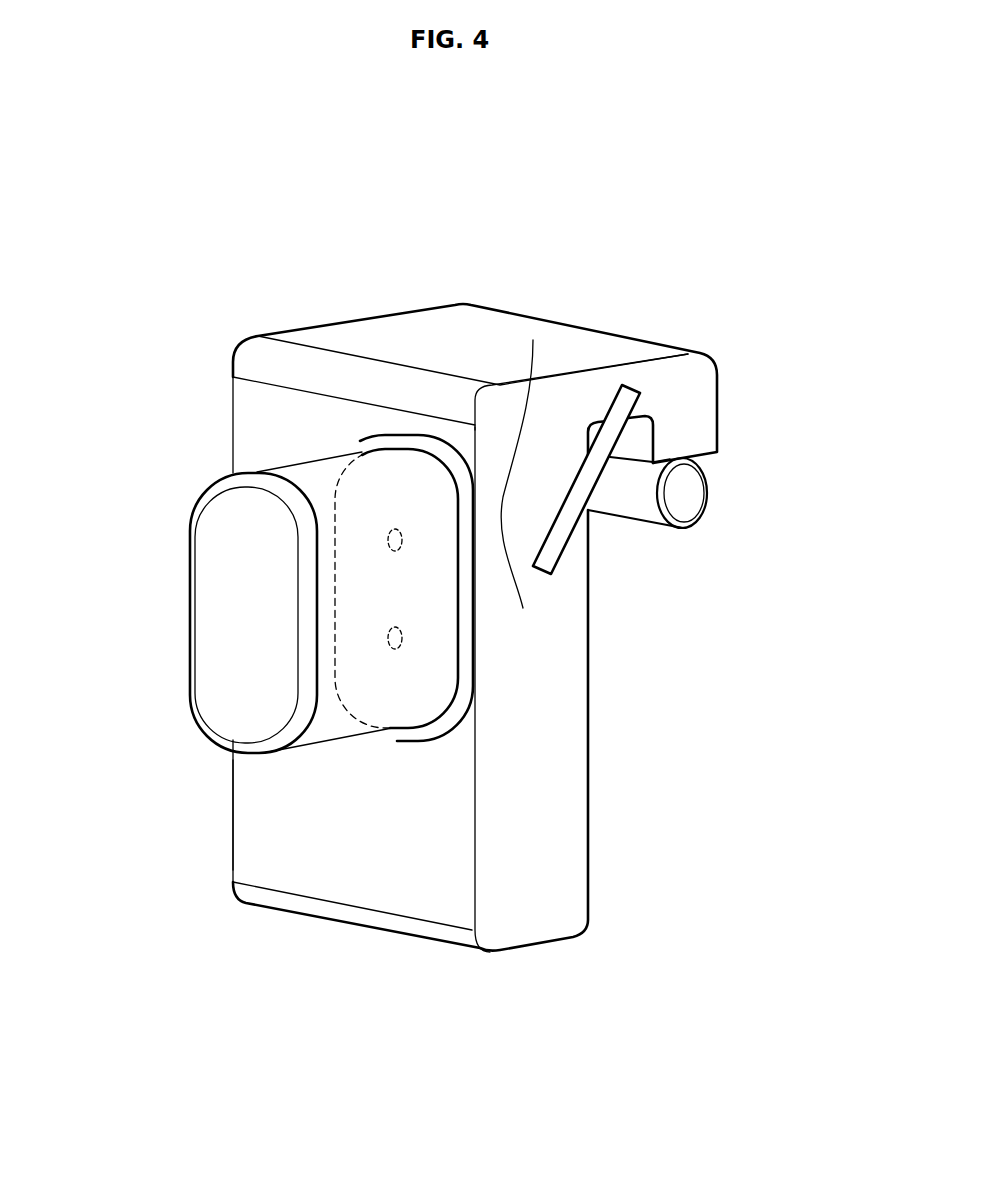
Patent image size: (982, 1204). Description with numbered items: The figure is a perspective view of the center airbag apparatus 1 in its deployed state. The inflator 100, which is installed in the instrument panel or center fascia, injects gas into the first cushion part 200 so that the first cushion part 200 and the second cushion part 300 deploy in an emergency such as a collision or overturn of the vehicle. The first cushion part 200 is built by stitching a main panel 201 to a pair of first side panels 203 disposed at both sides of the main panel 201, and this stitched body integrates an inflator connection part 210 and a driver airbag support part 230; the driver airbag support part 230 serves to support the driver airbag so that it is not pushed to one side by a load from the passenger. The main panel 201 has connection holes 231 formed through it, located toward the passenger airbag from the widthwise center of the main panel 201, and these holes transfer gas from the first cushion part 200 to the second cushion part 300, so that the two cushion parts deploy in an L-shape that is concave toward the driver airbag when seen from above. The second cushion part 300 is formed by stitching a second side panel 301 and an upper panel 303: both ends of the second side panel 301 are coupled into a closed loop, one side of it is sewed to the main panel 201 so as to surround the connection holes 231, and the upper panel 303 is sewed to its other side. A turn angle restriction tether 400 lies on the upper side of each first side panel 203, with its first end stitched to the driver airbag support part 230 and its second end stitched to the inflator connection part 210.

The center airbag apparatus 1 is at (824, 131).
The inflator 100 is at (712, 508).
The first cushion part 200 is at (617, 182).
The main panel 201 is at (372, 857).
The first side panels 203 is at (232, 815).
The inflator connection part 210 is at (687, 423).
The driver airbag support part 230 is at (533, 340).
The connection holes 231 is at (402, 547).
The second cushion part 300 is at (150, 505).
The second side panel 301 is at (310, 478).
The upper panel 303 is at (210, 592).
The turn angle restriction tether 400 is at (557, 547).